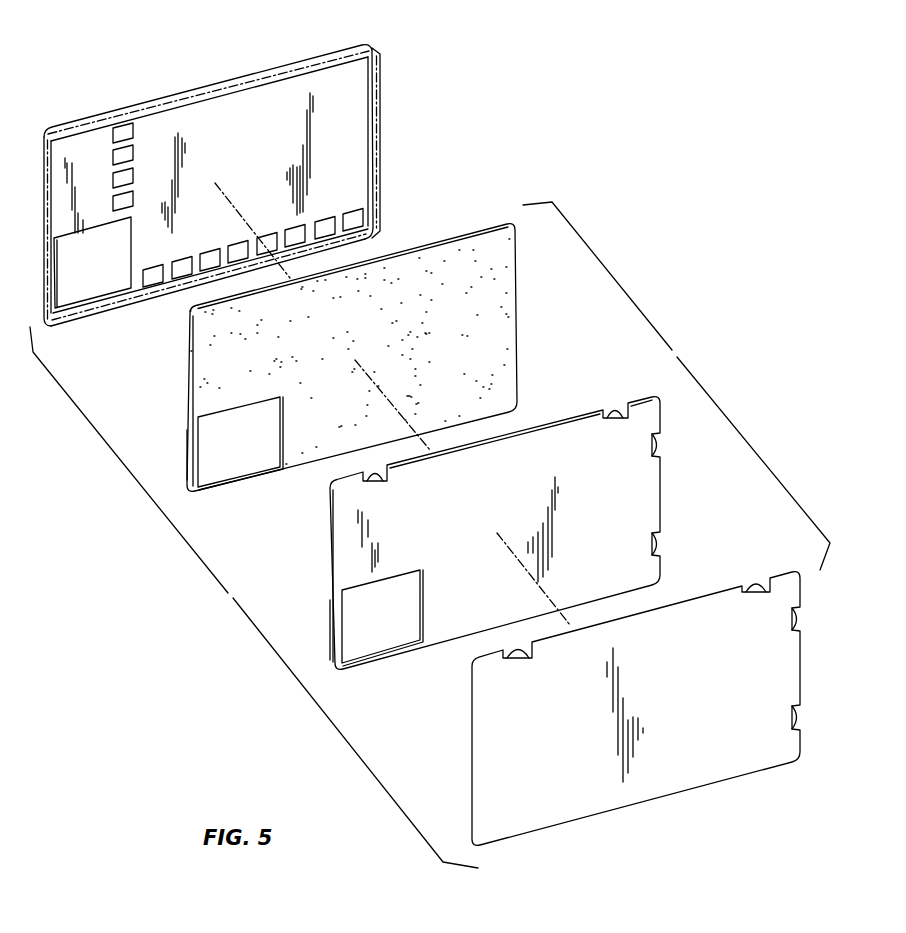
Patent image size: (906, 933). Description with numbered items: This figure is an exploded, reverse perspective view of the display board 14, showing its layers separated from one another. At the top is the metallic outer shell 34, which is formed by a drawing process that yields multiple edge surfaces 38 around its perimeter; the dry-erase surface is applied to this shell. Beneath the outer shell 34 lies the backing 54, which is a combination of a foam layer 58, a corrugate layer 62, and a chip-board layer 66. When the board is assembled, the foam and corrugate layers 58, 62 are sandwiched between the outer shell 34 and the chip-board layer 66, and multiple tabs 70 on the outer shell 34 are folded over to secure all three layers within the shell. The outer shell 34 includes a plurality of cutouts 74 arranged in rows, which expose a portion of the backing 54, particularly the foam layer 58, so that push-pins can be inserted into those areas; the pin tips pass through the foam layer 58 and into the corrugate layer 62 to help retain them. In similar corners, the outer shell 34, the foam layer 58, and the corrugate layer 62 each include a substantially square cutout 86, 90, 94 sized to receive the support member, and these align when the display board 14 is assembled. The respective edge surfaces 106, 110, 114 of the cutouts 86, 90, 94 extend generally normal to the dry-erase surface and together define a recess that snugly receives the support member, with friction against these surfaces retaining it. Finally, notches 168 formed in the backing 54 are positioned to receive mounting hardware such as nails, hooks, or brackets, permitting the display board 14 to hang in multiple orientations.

The display board 14 is at (230, 594).
The outer shell 34 is at (243, 195).
The edge surfaces 38 is at (258, 73).
The backing 54 is at (675, 351).
The foam layer 58 is at (355, 358).
The corrugate layer 62 is at (464, 533).
The chip-board layer 66 is at (466, 743).
The tabs 70 is at (215, 97).
The cutouts 74 is at (136, 152).
The cutout 86 is at (77, 305).
The cutout 90 is at (198, 436).
The cutout 94 is at (340, 620).
The edge surface 106 is at (112, 297).
The edge surface 110 is at (218, 478).
The edge surface 114 is at (358, 657).
The notches 168 is at (387, 479).